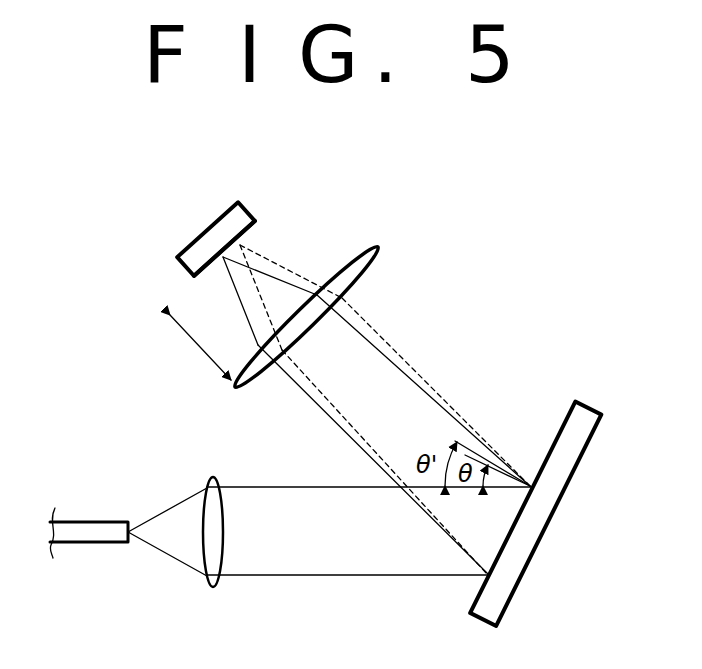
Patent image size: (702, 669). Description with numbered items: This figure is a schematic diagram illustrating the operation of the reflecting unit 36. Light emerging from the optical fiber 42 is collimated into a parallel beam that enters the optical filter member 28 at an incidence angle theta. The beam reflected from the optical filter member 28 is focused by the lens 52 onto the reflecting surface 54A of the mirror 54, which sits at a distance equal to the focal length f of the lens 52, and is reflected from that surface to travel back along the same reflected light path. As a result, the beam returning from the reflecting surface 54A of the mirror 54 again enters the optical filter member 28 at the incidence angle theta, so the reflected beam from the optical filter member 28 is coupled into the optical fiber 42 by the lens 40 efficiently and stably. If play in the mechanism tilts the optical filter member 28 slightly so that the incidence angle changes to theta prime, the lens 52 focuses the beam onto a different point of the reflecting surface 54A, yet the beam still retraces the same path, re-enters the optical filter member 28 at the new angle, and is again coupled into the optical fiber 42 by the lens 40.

The optical filter member 28 is at (507, 595).
The reflecting unit 36 is at (306, 375).
The lens 40 is at (215, 588).
The optical fiber 42 is at (95, 536).
The lens 52 is at (368, 261).
The mirror 54 is at (205, 223).
The reflecting surface 54A is at (249, 229).